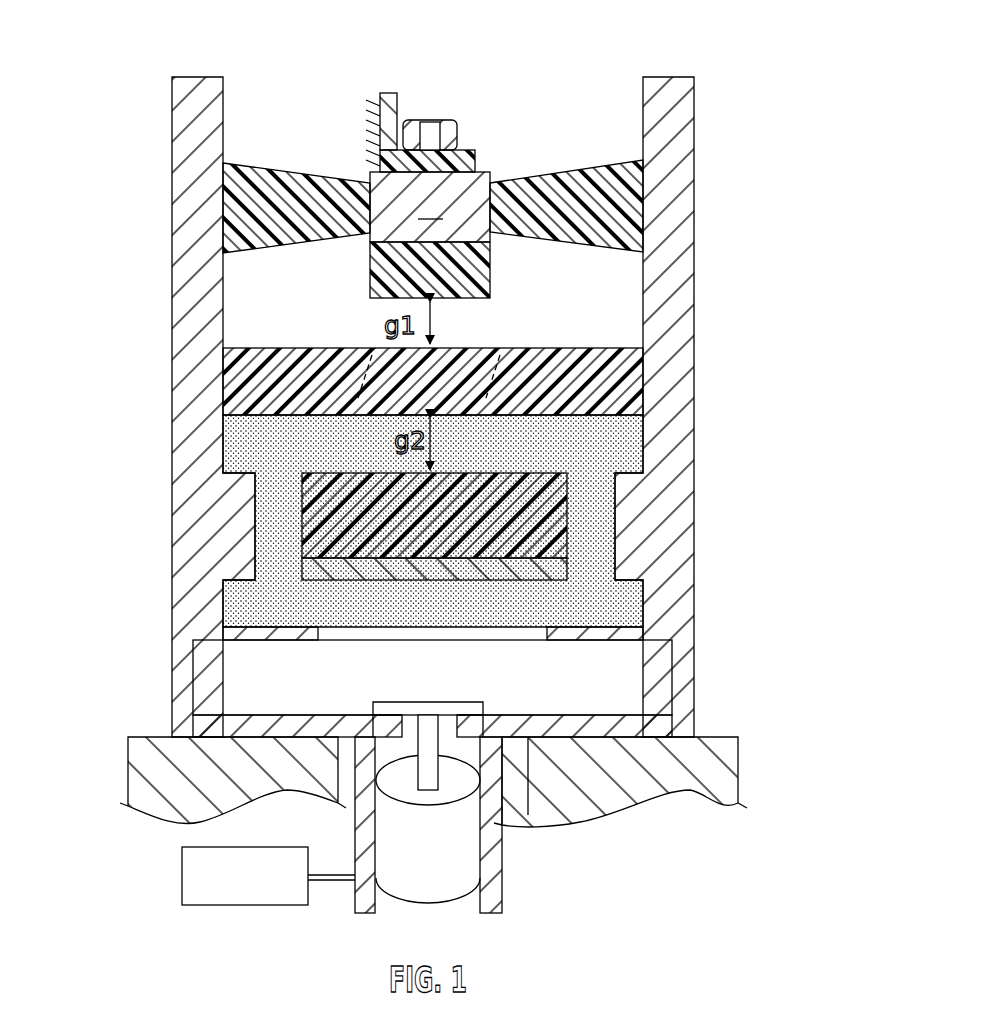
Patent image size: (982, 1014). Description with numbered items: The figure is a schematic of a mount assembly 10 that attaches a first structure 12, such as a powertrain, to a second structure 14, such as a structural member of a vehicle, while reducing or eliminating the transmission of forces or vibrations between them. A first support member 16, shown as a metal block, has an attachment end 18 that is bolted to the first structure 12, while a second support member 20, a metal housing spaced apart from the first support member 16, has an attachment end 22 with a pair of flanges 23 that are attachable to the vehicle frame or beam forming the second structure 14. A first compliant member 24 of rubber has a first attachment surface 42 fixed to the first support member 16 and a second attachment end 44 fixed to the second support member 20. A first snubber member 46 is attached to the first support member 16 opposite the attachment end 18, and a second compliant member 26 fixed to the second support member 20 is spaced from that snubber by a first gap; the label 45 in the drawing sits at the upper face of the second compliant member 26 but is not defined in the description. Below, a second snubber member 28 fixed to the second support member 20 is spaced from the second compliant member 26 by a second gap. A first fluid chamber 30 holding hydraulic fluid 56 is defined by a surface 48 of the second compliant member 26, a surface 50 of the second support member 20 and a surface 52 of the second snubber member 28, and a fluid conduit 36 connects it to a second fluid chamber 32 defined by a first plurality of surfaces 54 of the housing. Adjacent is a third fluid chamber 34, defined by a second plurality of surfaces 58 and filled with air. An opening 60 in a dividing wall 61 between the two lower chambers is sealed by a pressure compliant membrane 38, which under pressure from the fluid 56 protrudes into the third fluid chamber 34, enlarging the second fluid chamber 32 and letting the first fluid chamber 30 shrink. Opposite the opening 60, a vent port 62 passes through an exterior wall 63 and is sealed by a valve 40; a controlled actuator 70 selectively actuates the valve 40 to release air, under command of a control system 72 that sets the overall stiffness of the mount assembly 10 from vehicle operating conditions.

The mount assembly 10 is at (737, 47).
The first structure 12 is at (373, 97).
The second structure 14 is at (130, 758).
The first support member 16 is at (459, 152).
The attachment end 18 is at (494, 170).
The second support member 20 is at (172, 168).
The attachment end 22 is at (676, 740).
The pair of flanges 23 is at (357, 904).
The first compliant member 24 is at (645, 208).
The second compliant member 26 is at (646, 363).
The second snubber member 28 is at (568, 487).
The first fluid chamber 30 is at (234, 445).
The second fluid chamber 32 is at (263, 620).
The third fluid chamber 34 is at (200, 692).
The fluid conduit 36 is at (254, 551).
The pressure compliant membrane 38 is at (420, 643).
The valve 40 is at (440, 745).
The first attachment end or surface 42 is at (377, 226).
The second attachment end 44 is at (226, 253).
The plate top surface 45 is at (226, 347).
The first snubber member 46 is at (492, 295).
The surface of the second compliant member 48 is at (642, 418).
The surface of the second support member 50 is at (224, 433).
The surface of the second snubber member 52 is at (378, 472).
The first plurality of surfaces 54 is at (222, 600).
The hydraulic fluid 56 is at (621, 457).
The second plurality of surfaces 58 is at (193, 664).
The opening or aperture 60 is at (548, 630).
The dividing wall 61 is at (618, 637).
The vent port 62 is at (456, 730).
The exterior wall 63 is at (540, 716).
The controlled actuator 70 is at (482, 812).
The control system 72 is at (182, 878).